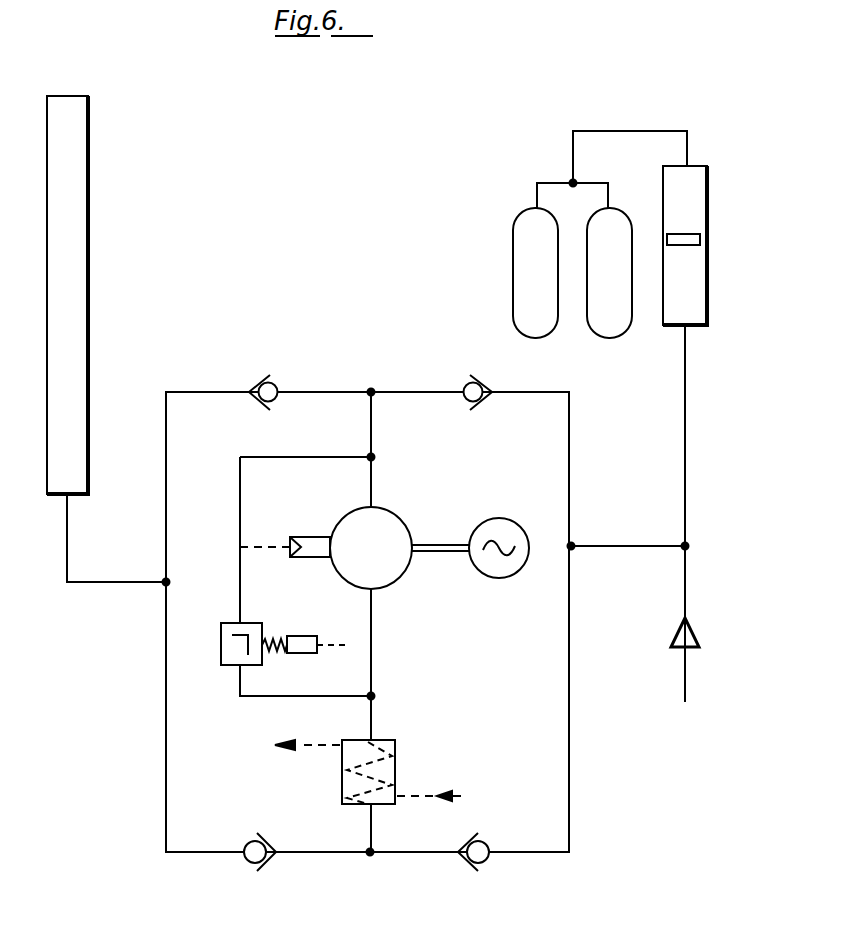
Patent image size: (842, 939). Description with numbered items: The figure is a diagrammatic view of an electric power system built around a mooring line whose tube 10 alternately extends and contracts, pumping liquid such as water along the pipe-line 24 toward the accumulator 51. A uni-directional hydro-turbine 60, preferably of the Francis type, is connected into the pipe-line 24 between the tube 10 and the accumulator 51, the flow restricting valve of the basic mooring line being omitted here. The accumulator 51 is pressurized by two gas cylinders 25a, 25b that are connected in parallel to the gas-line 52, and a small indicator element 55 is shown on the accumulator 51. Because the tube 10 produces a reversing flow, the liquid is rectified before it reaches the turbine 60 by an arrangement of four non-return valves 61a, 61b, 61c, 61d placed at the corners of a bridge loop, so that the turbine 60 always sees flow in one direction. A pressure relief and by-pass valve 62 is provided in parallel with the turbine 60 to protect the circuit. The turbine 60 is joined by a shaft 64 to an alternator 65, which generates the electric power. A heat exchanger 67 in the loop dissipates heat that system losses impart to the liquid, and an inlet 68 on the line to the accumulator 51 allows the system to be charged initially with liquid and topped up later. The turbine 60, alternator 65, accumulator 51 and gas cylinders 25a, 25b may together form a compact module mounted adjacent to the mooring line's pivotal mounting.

The tube 10 is at (74, 341).
The pipe-line 24 is at (133, 583).
The gas cylinder 25a is at (521, 236).
The gas cylinder 25b is at (622, 326).
The accumulator 51 is at (708, 186).
The gas-line 52 is at (606, 130).
The level indicator 55 is at (674, 236).
The uni-directional hydro-turbine 60 is at (388, 530).
The non-return valve 61a is at (275, 384).
The non-return valve 61b is at (479, 383).
The non-return valve 61c is at (250, 863).
The non-return valve 61d is at (470, 864).
The pressure relief and by-pass valve 62 is at (226, 658).
The shaft 64 is at (451, 553).
The alternator 65 is at (500, 578).
The heat exchanger 67 is at (395, 745).
The inlet 68 is at (676, 617).